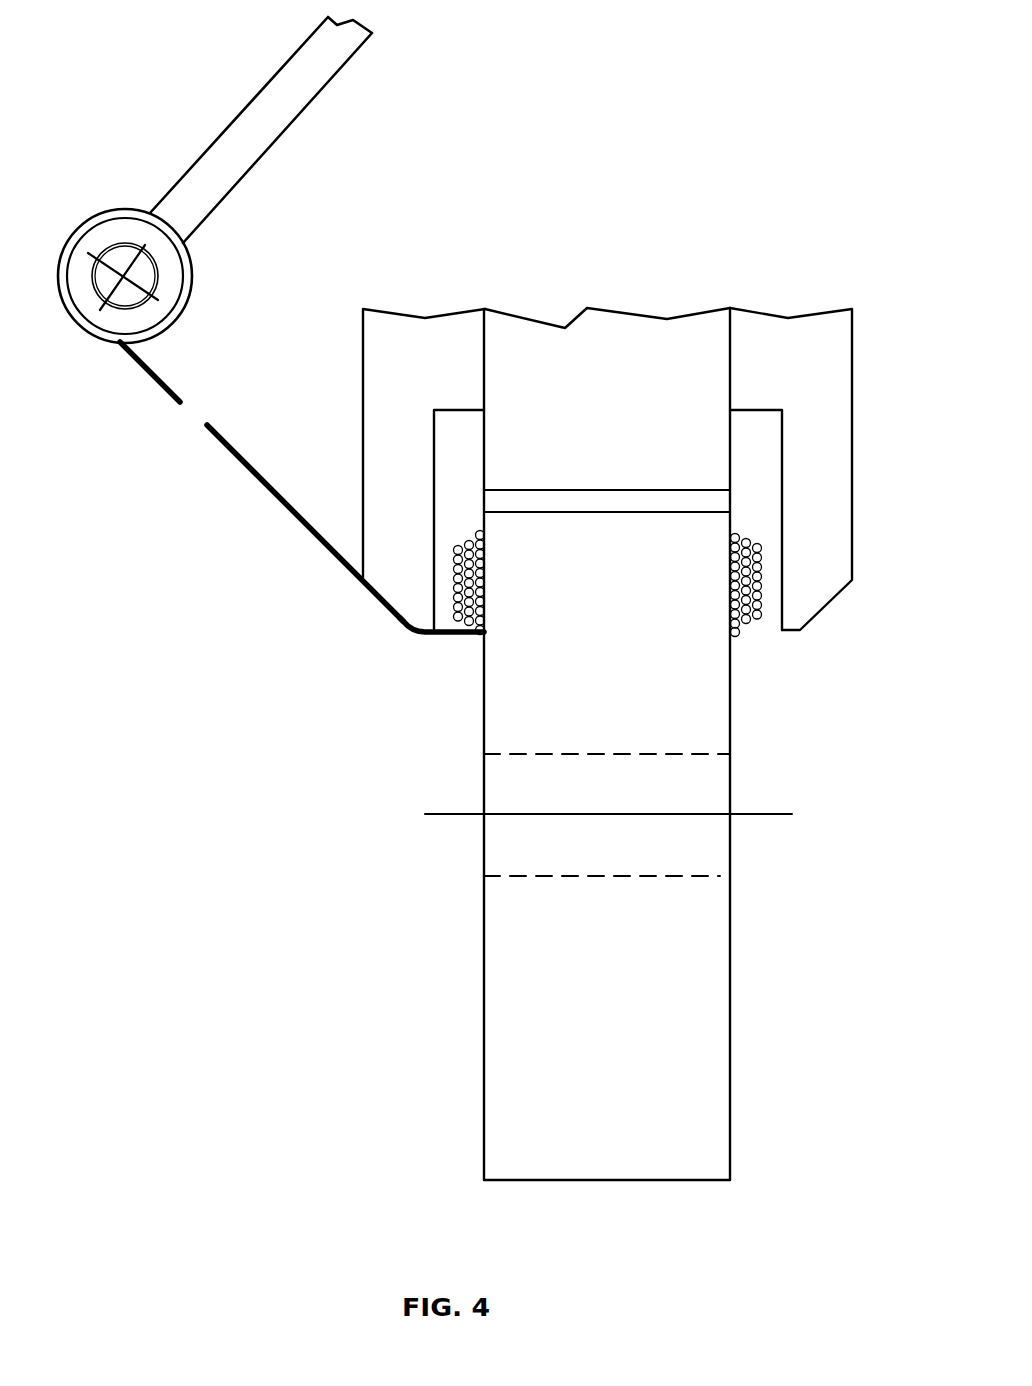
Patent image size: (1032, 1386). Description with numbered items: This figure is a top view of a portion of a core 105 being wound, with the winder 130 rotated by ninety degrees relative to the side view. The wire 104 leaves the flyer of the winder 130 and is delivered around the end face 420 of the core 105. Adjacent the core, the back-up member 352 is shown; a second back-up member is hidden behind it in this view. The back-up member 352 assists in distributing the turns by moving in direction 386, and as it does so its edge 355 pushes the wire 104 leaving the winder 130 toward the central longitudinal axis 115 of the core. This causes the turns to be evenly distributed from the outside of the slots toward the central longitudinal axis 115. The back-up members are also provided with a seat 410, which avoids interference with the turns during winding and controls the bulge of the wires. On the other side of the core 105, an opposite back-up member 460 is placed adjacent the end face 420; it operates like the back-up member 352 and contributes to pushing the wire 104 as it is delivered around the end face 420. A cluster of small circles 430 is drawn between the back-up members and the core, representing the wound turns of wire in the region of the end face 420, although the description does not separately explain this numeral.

The wire 104 is at (243, 453).
The core 105 is at (730, 998).
The central longitudinal axis 115 is at (758, 818).
The winder 130 is at (283, 133).
The back-up member 352 is at (350, 352).
The edge 355 is at (380, 622).
The direction 386 is at (445, 738).
The seat 410 is at (461, 426).
The end face 420 is at (788, 715).
The bearing balls 430 is at (487, 602).
The opposite back-up member 460 is at (853, 470).